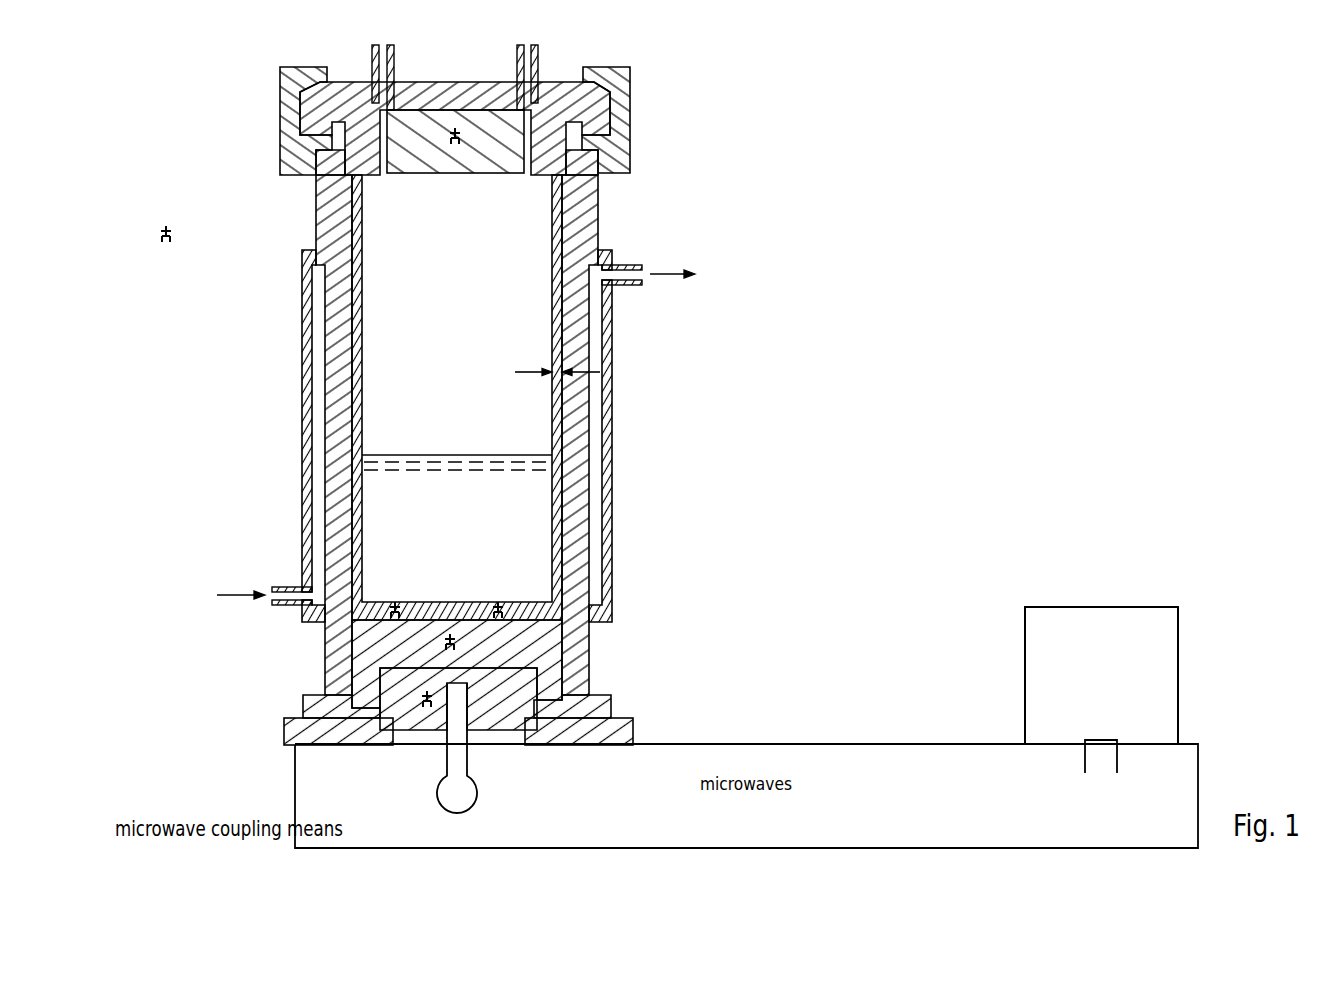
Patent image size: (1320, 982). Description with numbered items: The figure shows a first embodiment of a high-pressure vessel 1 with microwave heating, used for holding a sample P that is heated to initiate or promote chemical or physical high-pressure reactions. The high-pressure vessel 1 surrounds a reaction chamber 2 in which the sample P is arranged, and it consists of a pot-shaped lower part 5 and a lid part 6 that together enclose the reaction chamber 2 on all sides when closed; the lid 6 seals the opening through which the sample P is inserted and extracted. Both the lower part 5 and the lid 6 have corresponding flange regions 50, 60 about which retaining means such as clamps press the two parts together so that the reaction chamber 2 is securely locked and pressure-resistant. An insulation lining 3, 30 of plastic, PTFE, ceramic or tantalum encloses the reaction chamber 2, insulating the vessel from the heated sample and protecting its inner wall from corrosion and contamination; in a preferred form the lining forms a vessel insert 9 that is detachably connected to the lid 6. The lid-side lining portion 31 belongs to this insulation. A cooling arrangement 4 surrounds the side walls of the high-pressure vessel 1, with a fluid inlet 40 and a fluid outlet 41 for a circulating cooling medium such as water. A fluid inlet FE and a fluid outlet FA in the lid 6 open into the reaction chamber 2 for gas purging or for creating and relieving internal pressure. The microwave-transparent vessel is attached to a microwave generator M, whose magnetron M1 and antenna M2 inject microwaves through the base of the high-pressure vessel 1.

The high-pressure vessel 1 is at (479, 395).
The reaction chamber 2 is at (458, 318).
The insulation lining 3 is at (515, 365).
The insulation lining 30 is at (563, 527).
The crucible lid 31 is at (430, 152).
The cooling arrangement 4 is at (292, 437).
The fluid inlet 40 is at (278, 606).
The fluid outlet 41 is at (645, 267).
The lower part 5 is at (597, 226).
The flange region 50 is at (280, 152).
The lid part 6 is at (613, 112).
The flange region 60 is at (280, 112).
The vessel insert 9 is at (564, 398).
The fluid inlet FE is at (396, 66).
The fluid outlet FA is at (516, 68).
The sample P is at (457, 502).
The microwave generator M is at (1121, 690).
The magnetron M1 is at (1037, 672).
The antenna M2 is at (468, 750).